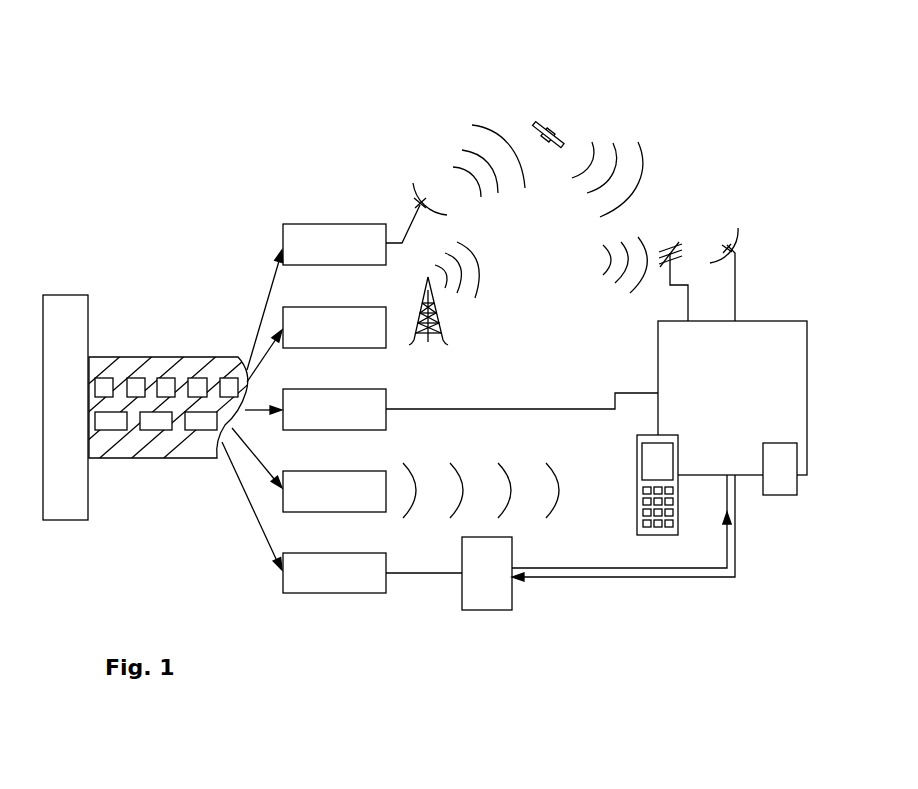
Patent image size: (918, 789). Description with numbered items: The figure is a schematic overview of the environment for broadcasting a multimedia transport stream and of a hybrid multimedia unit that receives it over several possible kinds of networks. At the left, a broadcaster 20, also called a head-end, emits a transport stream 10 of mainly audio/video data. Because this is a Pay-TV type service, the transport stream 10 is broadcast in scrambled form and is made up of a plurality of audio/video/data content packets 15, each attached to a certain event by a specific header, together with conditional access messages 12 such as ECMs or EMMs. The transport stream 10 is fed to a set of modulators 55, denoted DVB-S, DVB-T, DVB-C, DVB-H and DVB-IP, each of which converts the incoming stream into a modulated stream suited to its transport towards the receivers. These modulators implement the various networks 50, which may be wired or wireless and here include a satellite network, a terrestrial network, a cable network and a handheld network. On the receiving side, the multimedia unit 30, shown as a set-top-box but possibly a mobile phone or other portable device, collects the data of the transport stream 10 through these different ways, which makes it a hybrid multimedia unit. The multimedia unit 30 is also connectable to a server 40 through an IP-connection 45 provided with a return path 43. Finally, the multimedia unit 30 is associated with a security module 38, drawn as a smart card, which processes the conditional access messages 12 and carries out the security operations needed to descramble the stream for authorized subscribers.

The transport stream 10 is at (149, 377).
The conditional access message 12 is at (157, 422).
The content packet 15 is at (200, 383).
The broadcaster 20 is at (70, 307).
The multimedia unit 30 is at (787, 338).
The security module 38 is at (783, 488).
The server 40 is at (485, 595).
The return path 43 is at (550, 577).
The IP-connection 45 is at (638, 588).
The networks 50 is at (375, 95).
The modulator 55 is at (330, 194).